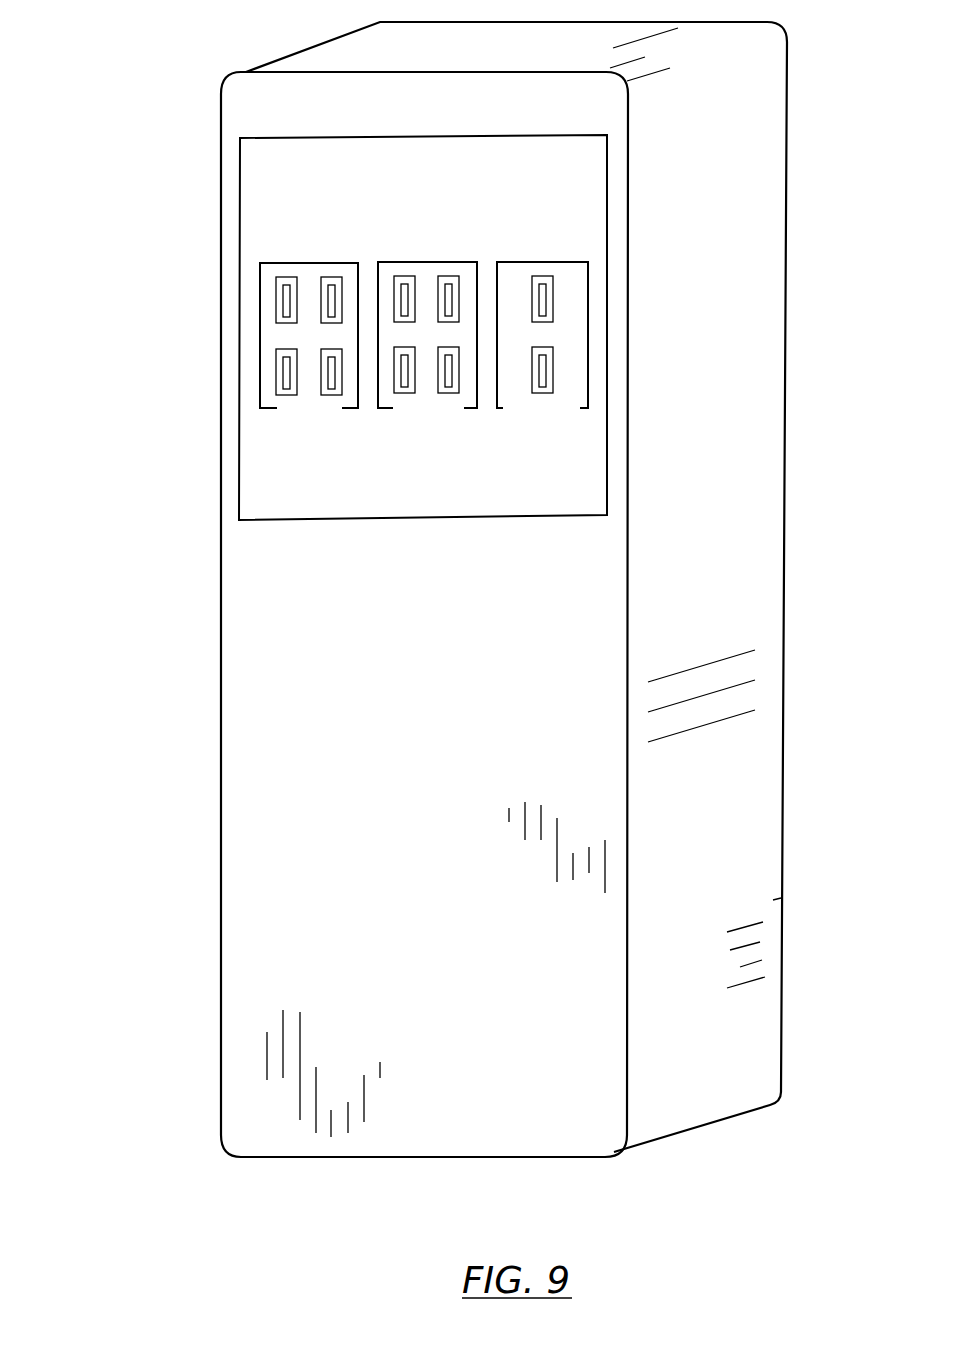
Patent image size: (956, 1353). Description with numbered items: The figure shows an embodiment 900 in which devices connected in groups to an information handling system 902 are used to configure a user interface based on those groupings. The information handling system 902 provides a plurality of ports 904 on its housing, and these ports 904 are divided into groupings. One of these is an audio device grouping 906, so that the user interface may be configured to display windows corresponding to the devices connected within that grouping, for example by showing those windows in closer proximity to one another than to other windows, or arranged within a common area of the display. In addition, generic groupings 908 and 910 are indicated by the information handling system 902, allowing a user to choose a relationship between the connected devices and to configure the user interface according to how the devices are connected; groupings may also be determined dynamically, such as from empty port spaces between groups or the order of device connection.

The embodiment 900 is at (166, 178).
The information handling system 902 is at (642, 200).
The ports 904 is at (605, 370).
The audio device grouping 906 is at (330, 262).
The grouping 908 is at (450, 262).
The grouping 910 is at (565, 262).